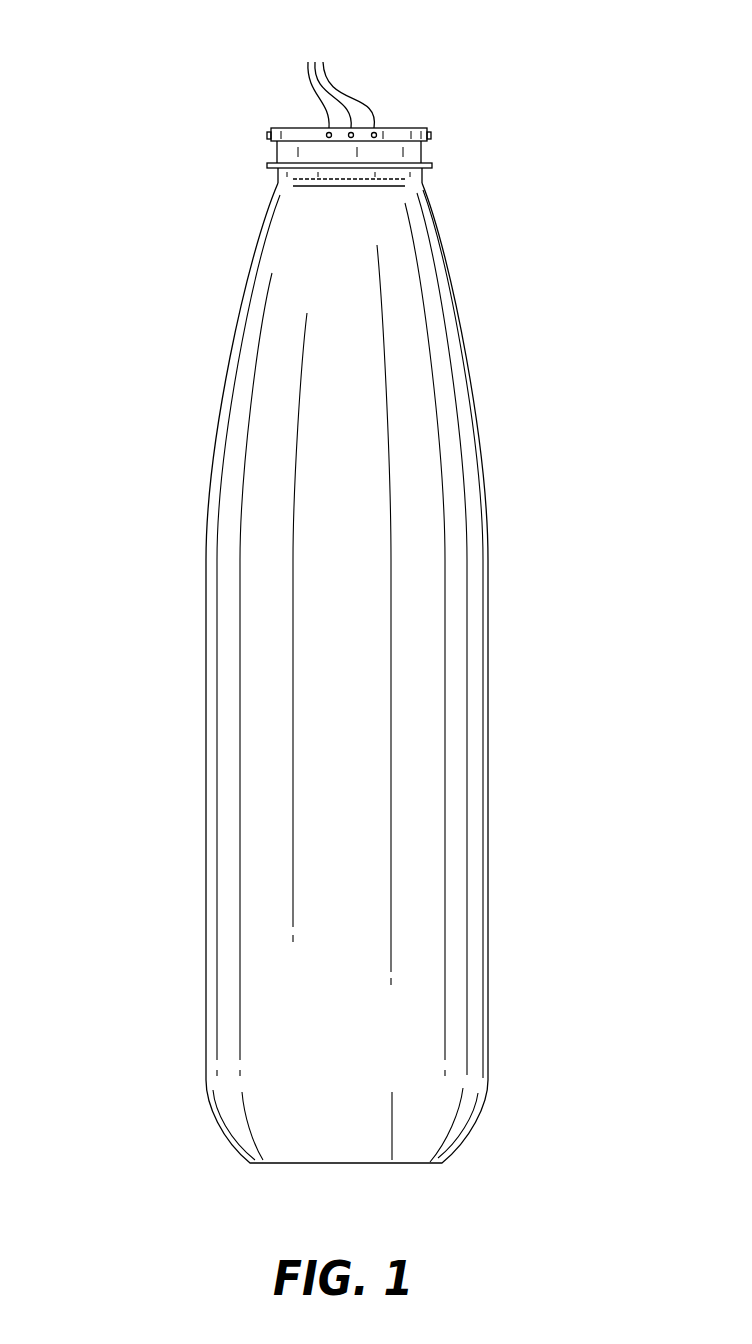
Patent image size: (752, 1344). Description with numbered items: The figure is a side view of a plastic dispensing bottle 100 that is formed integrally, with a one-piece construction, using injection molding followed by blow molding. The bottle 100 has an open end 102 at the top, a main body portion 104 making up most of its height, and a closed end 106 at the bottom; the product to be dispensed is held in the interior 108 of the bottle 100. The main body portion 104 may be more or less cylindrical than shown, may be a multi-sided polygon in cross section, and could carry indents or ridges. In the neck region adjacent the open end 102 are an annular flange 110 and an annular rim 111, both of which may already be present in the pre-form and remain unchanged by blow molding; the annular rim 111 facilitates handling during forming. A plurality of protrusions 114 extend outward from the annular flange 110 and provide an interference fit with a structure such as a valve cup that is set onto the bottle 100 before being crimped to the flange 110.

The plastic dispensing bottle 100 is at (522, 653).
The open end 102 is at (432, 102).
The main body portion 104 is at (205, 792).
The closed end 106 is at (255, 1192).
The interior 108 is at (285, 665).
The annular flange 110 is at (425, 130).
The annular rim 111 is at (423, 172).
The protrusions 114 is at (493, 148).